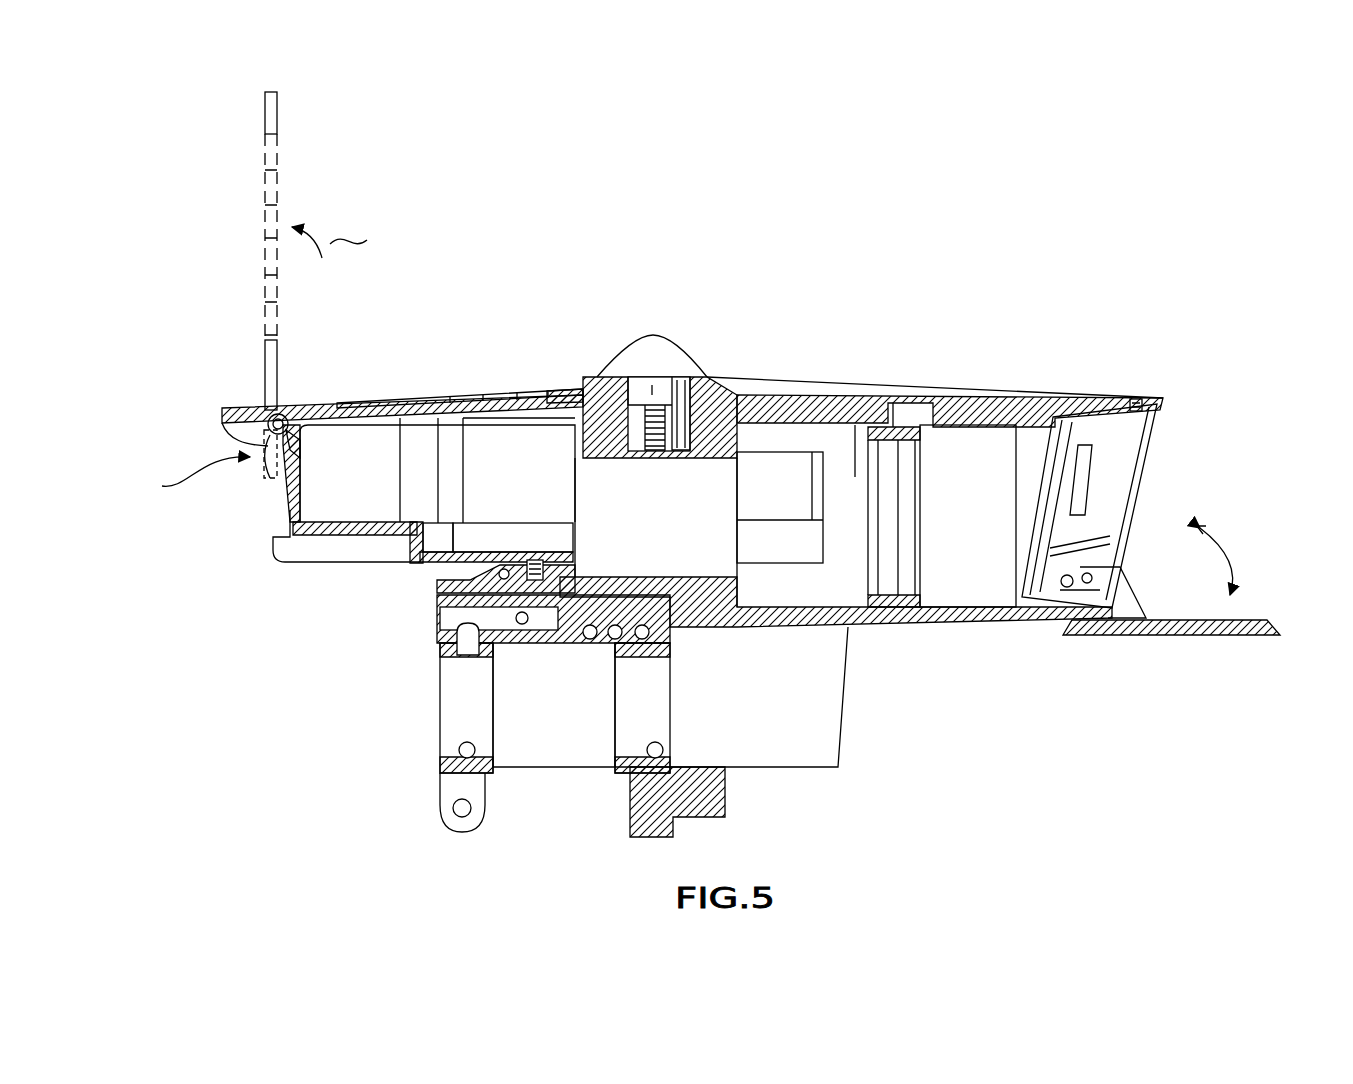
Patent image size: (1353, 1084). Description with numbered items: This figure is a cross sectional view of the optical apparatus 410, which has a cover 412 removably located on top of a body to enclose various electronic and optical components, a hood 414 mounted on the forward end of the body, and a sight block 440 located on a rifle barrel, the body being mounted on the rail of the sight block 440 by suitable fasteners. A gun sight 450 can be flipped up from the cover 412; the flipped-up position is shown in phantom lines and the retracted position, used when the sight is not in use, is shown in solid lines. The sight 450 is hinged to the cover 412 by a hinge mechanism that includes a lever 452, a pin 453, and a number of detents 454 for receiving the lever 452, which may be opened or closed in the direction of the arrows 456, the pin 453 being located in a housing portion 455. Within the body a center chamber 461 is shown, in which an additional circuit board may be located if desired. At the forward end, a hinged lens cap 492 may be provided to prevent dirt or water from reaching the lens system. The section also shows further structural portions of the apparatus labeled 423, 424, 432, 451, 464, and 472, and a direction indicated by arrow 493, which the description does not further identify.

The apparatus 410 is at (921, 348).
The cover 412 is at (280, 508).
The hood 414 is at (984, 395).
The lower housing 423 is at (830, 735).
The top wall 424 is at (790, 398).
The dome cap 432 is at (653, 337).
The sight block 440 is at (630, 805).
The gun sight 450 is at (262, 182).
The cover end block 451 is at (565, 391).
The lever 452 is at (232, 407).
The pin 453 is at (287, 416).
The detents 454 is at (296, 446).
The housing portion 455 is at (278, 470).
The arrows 456 is at (262, 363).
The center chamber 461 is at (374, 510).
The second chamber 464 is at (694, 535).
The support column 472 is at (484, 760).
The hinged lens cap 492 is at (1218, 637).
The pivot direction 493 is at (1233, 546).